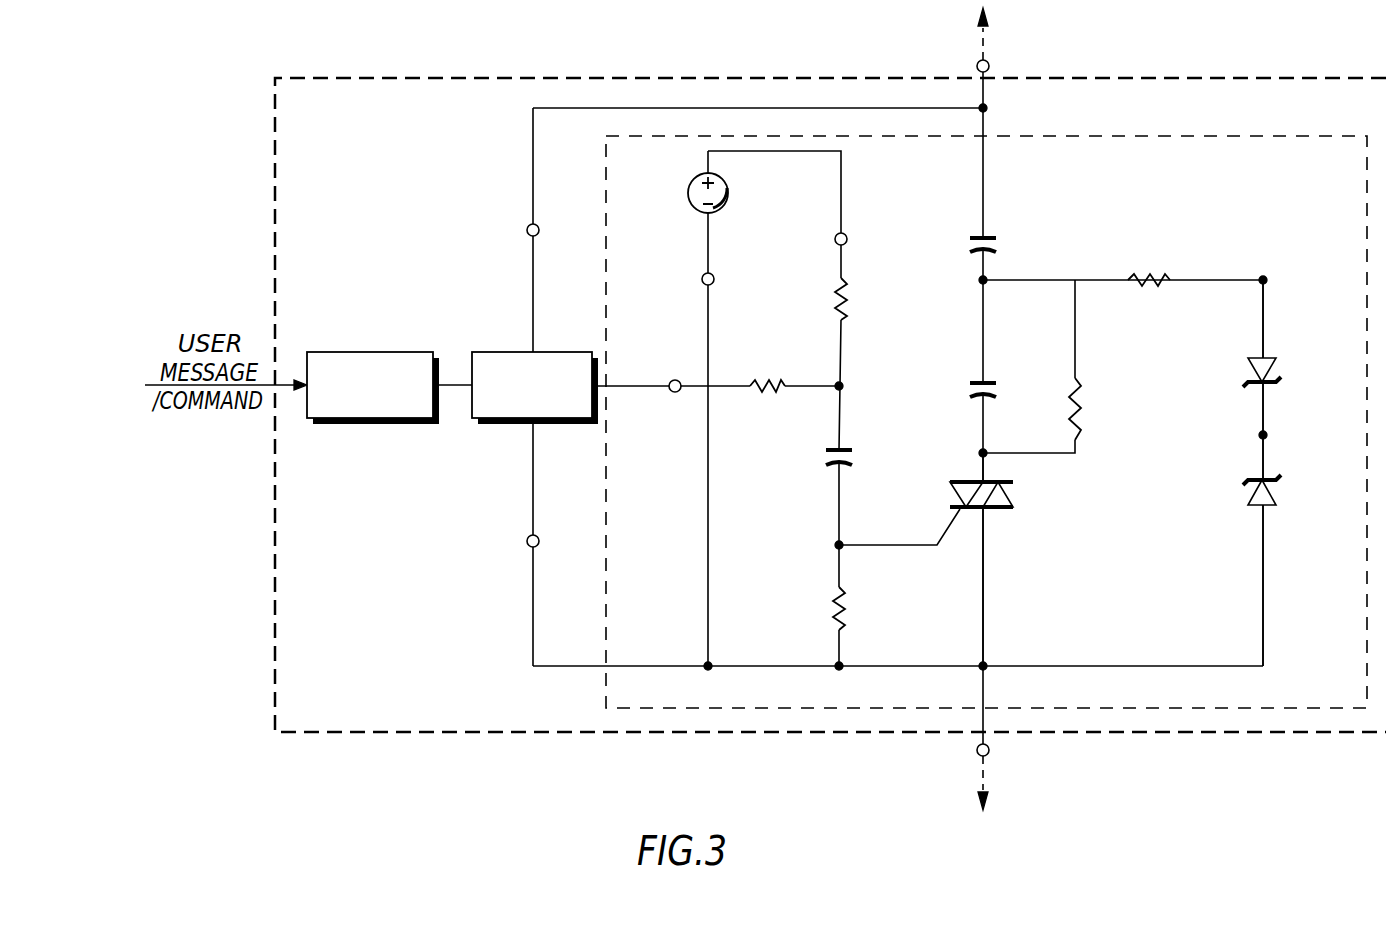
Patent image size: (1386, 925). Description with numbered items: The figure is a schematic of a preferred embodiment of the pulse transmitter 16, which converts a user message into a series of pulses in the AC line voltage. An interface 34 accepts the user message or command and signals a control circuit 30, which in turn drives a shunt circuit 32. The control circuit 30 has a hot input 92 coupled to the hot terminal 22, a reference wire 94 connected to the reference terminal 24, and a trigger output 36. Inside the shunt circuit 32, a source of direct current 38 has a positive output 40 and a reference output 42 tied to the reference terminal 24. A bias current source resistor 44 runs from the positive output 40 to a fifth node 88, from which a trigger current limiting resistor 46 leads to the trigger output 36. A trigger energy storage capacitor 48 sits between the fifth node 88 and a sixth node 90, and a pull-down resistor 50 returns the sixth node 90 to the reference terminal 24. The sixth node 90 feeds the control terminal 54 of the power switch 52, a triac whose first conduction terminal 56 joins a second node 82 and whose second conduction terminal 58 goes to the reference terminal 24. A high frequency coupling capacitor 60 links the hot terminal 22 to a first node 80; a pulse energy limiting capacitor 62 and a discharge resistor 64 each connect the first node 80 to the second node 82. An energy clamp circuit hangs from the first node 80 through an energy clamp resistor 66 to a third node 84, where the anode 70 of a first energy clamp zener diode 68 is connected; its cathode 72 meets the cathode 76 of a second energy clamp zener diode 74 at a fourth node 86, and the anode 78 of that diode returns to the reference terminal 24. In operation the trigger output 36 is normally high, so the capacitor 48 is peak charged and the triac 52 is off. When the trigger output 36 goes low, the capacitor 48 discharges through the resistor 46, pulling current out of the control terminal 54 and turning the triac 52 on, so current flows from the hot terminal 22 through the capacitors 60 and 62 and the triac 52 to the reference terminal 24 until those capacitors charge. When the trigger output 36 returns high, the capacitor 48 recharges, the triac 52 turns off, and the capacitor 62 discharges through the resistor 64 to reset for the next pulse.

The pulse transmitter 16 is at (630, 78).
The hot terminal 22 is at (988, 61).
The reference terminal 24 is at (990, 751).
The control circuit 30 is at (520, 352).
The shunt circuit 32 is at (1172, 136).
The interface 34 is at (362, 352).
The trigger output 36 is at (678, 380).
The source of direct current 38 is at (729, 190).
The positive output 40 is at (846, 234).
The reference output 42 is at (713, 274).
The bias current source resistor 44 is at (848, 300).
The trigger current limiting resistor 46 is at (762, 378).
The trigger energy storage capacitor 48 is at (846, 447).
The pull-down resistor 50 is at (846, 592).
The power switch 52 is at (1012, 500).
The control terminal 54 is at (878, 544).
The first conduction terminal 56 is at (981, 456).
The second conduction terminal 58 is at (986, 578).
The high frequency coupling capacitor 60 is at (990, 236).
The pulse energy limiting capacitor 62 is at (992, 382).
The discharge resistor 64 is at (1080, 378).
The energy clamp resistor 66 is at (1155, 275).
The first energy clamp zener diode 68 is at (1248, 359).
The anode 70 is at (1266, 313).
The cathode 72 is at (1275, 401).
The second energy clamp zener diode 74 is at (1250, 477).
The cathode 76 is at (1275, 439).
The anode 78 is at (1275, 529).
The first node 80 is at (986, 277).
The second node 82 is at (986, 450).
The third node 84 is at (1258, 276).
The fourth node 86 is at (1260, 432).
The fifth node 88 is at (842, 382).
The sixth node 90 is at (836, 542).
The hot input 92 is at (538, 226).
The reference wire 94 is at (537, 536).